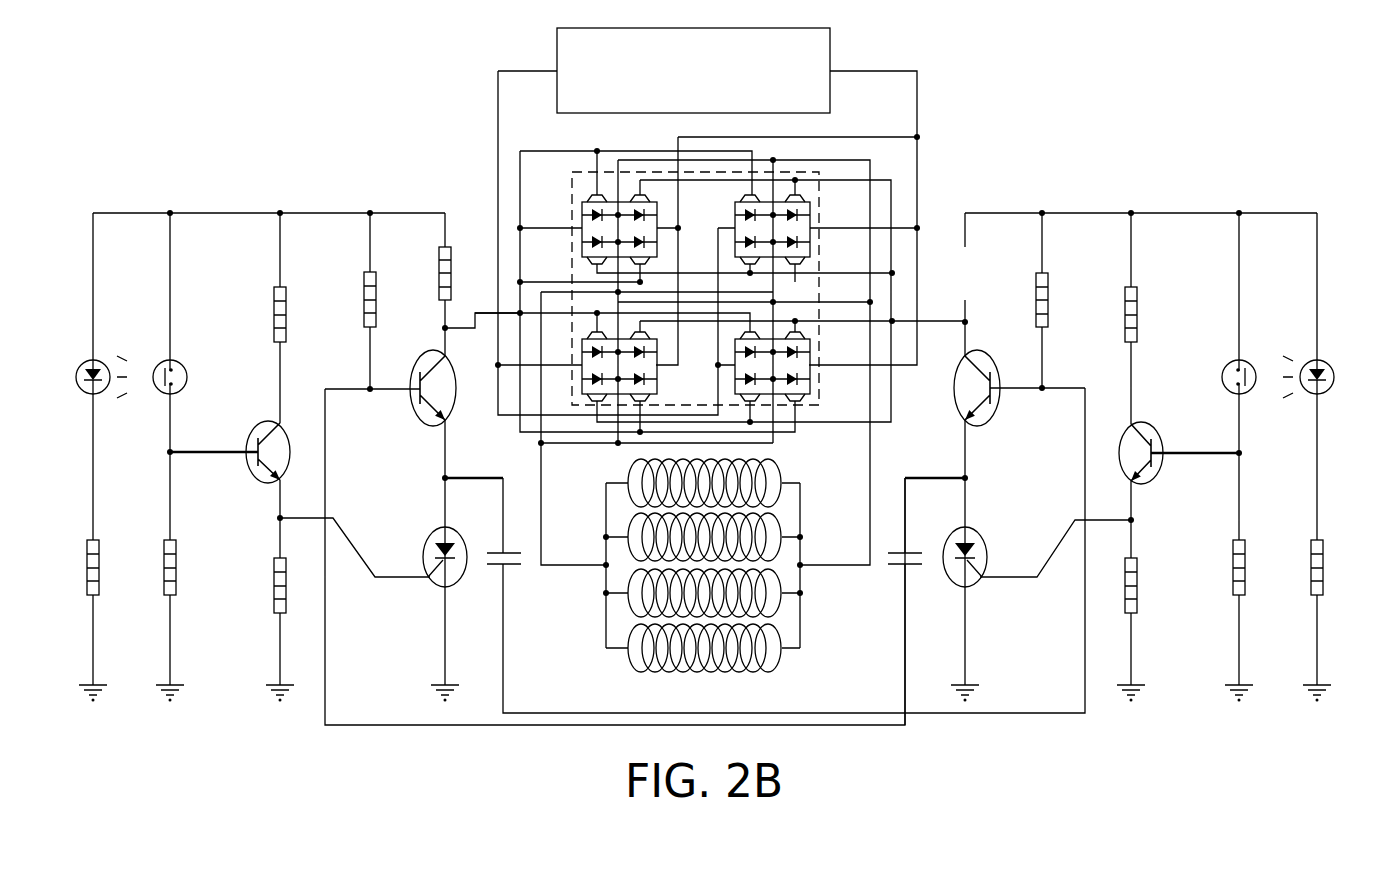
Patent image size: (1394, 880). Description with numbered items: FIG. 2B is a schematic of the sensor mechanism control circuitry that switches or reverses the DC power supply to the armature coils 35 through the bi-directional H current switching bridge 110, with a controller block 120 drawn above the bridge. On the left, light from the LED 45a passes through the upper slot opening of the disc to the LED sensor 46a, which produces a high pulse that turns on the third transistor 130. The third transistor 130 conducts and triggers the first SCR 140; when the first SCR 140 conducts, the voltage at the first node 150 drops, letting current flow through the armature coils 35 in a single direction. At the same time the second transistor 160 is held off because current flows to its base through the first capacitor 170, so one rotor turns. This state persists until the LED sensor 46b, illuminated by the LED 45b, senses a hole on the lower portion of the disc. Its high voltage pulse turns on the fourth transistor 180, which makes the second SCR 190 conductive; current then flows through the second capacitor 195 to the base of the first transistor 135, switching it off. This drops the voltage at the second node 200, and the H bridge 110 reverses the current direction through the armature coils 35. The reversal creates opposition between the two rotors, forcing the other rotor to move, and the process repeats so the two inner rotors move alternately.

The armature coils 35 is at (621, 655).
The LED 45a is at (79, 395).
The LED sensor 46a is at (158, 351).
The LED 45b is at (1333, 397).
The LED sensor 46b is at (1251, 352).
The bi-directional H current switching bridge 110 is at (828, 206).
The controller 120 is at (795, 70).
The transistor Q3 130 is at (253, 480).
The transistor Q1 135 is at (421, 348).
The SCR 1 140 is at (432, 587).
The node 1 150 is at (438, 323).
The transistor Q2 160 is at (989, 347).
The capacitor 1 170 is at (489, 570).
The transistor Q4 180 is at (1157, 482).
The SCR 2 190 is at (980, 587).
The capacitor 2 195 is at (917, 570).
The node 2 200 is at (968, 319).